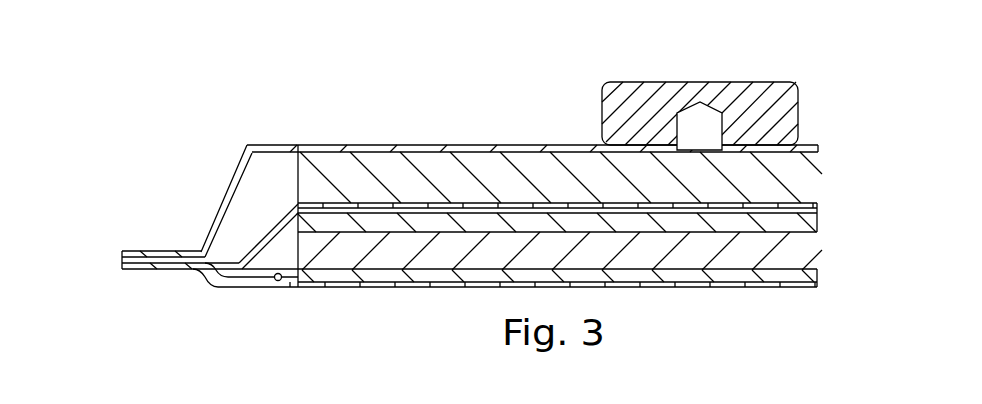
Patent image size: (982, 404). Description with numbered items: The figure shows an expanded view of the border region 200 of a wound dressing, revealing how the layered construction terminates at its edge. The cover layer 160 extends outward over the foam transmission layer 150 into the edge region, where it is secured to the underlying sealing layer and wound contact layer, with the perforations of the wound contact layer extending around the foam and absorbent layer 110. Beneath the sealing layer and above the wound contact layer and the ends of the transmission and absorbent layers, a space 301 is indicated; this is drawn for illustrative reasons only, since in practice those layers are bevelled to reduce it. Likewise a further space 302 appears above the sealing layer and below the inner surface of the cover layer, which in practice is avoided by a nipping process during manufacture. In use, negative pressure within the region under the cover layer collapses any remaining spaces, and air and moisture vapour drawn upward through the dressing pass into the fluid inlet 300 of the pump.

The border region 200 is at (180, 173).
The further space 302 is at (245, 197).
The cover layer 160 is at (283, 150).
The foam transmission layer 150 is at (559, 192).
The absorbent layer 110 is at (556, 259).
The space 301 is at (266, 258).
The fluid inlet 300 is at (706, 130).